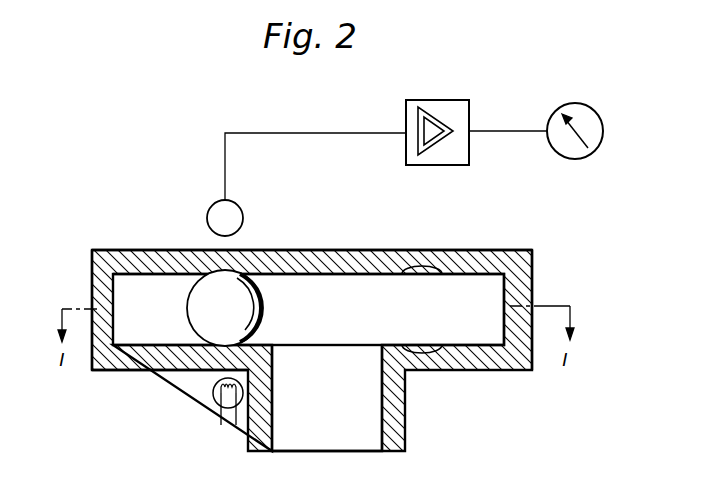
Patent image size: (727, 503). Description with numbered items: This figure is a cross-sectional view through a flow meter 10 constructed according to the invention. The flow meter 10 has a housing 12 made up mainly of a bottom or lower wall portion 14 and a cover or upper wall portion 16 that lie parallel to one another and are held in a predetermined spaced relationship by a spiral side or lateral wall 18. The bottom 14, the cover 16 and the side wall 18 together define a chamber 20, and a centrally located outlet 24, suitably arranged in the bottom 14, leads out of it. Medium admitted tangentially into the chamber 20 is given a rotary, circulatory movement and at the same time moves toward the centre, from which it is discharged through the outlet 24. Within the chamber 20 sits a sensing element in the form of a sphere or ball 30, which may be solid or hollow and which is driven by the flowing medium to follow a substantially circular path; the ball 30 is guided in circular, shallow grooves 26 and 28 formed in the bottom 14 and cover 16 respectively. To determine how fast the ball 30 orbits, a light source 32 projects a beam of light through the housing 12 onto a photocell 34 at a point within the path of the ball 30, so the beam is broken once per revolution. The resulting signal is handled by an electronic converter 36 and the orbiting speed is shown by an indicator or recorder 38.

The flow meter 10 is at (541, 252).
The housing 12 is at (352, 244).
The bottom or lower wall portion 14 is at (162, 362).
The cover or upper wall portion 16 is at (472, 262).
The spiral side or lateral wall 18 is at (100, 297).
The chamber 20 is at (453, 318).
The outlet 24 is at (362, 418).
The groove 26 is at (418, 280).
The groove 28 is at (422, 346).
The ball 30 is at (212, 290).
The light source 32 is at (214, 399).
The photocell 34 is at (221, 207).
The electronic converter 36 is at (440, 108).
The indicator or recorder 38 is at (578, 108).